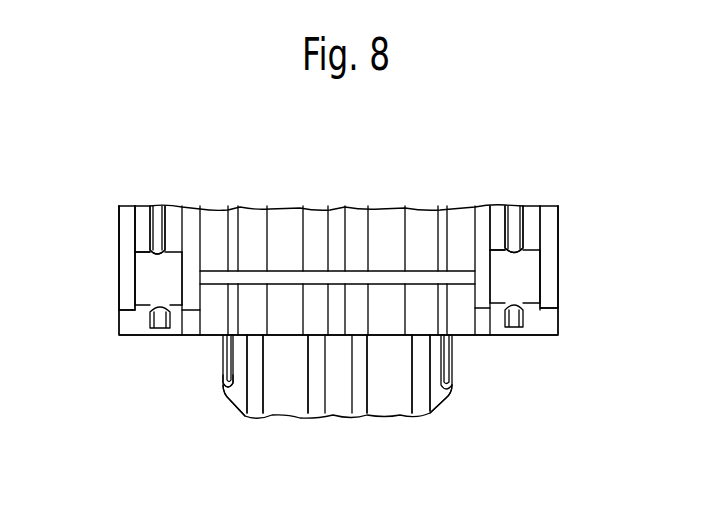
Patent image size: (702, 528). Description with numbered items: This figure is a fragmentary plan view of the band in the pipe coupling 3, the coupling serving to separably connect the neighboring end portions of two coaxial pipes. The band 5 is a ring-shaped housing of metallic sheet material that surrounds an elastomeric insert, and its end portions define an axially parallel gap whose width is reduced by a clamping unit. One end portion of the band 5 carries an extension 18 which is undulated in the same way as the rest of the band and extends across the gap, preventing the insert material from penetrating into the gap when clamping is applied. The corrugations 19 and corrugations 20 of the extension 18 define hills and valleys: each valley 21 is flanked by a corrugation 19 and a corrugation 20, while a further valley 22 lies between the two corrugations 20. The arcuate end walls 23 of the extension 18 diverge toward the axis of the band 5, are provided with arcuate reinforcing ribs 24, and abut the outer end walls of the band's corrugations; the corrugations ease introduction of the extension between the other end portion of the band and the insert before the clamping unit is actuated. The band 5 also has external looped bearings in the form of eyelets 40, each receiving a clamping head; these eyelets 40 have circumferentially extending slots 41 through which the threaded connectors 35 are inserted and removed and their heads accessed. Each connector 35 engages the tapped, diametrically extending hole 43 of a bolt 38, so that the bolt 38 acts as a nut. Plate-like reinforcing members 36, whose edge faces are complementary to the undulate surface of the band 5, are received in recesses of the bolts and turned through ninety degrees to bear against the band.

The coupling 3 is at (72, 285).
The band 5 is at (291, 209).
The extension 18 is at (221, 363).
The corrugation 19 is at (246, 406).
The corrugation 20 is at (357, 405).
The valley 21 is at (279, 403).
The further valley 22 is at (337, 390).
The arcuate end wall 23 is at (231, 397).
The rib 24 is at (225, 381).
The threaded connector 35 is at (163, 208).
The reinforcing member 36 is at (385, 268).
The bolt 38 is at (148, 277).
The eyelet 40 is at (127, 233).
The slot 41 is at (138, 216).
The hole 43 is at (153, 291).